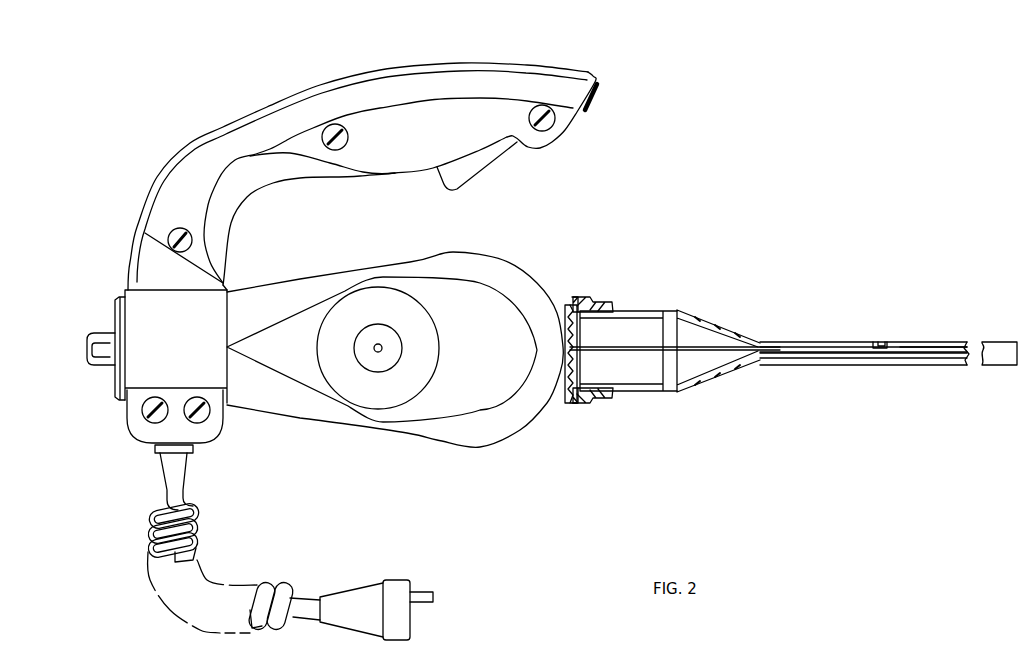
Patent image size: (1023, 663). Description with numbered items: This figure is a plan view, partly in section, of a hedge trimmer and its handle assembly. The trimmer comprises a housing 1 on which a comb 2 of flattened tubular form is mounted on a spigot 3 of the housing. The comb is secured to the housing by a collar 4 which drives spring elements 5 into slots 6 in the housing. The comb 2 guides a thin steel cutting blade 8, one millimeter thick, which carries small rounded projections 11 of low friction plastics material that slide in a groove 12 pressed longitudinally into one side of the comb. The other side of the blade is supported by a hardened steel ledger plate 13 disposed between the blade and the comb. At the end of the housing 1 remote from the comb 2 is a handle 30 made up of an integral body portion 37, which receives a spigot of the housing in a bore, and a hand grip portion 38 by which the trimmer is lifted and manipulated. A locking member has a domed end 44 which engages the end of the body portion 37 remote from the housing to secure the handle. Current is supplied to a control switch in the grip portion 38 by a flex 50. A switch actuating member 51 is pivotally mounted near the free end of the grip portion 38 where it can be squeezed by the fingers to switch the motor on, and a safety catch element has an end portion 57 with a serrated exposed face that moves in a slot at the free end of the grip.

The housing 1 is at (409, 266).
The comb 2 is at (817, 342).
The spigot 3 is at (627, 313).
The collar 4 is at (613, 400).
The spring elements 5 is at (572, 307).
The slots 6 is at (567, 345).
The cutting blade 8 is at (870, 345).
The rounded projections 11 is at (879, 343).
The groove 12 is at (920, 344).
The ledger plate 13 is at (793, 353).
The handle 30 is at (228, 150).
The body portion 37 is at (130, 320).
The hand grip portion 38 is at (390, 112).
The domed end 44 is at (112, 385).
The flex 50 is at (143, 540).
The switch actuating member 51 is at (500, 143).
The end portion 57 is at (594, 102).